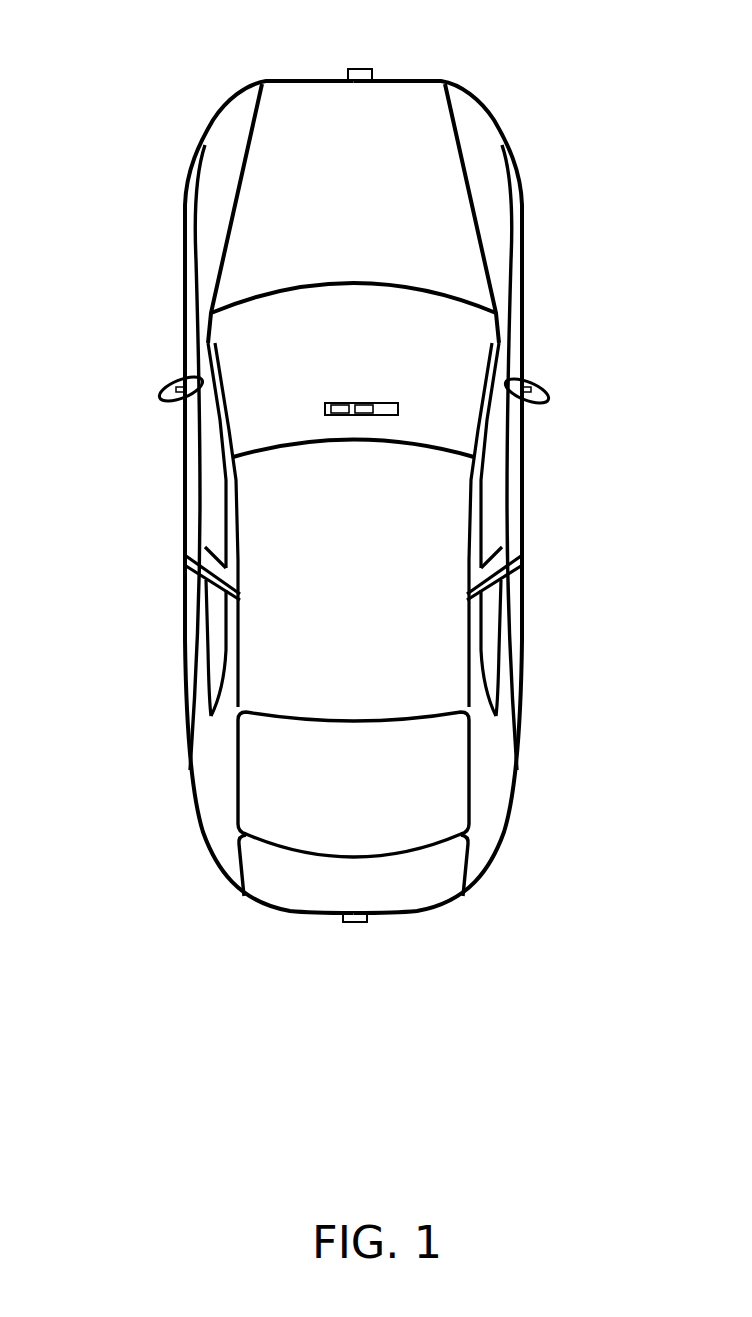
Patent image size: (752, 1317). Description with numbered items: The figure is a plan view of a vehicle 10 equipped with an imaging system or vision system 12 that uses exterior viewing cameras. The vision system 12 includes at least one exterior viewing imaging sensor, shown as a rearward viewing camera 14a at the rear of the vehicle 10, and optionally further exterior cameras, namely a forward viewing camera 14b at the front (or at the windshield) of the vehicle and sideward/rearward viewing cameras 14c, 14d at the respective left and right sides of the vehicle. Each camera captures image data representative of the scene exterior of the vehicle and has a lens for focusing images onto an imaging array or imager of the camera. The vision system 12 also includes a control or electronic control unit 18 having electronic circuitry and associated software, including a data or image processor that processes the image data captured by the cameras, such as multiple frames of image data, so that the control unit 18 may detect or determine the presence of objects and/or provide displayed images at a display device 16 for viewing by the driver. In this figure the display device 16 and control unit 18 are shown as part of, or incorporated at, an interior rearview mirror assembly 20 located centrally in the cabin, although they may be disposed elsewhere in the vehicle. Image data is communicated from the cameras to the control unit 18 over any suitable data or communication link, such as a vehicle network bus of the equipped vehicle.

The vehicle 10 is at (118, 91).
The vision system 12 is at (312, 934).
The rearward viewing camera 14a is at (362, 921).
The forward viewing camera 14b is at (366, 69).
The sideward/rearward viewing camera 14c is at (170, 386).
The sideward/rearward viewing camera 14d is at (536, 386).
The display device 16 is at (340, 404).
The electronic control unit 18 is at (362, 404).
The interior rearview mirror assembly 20 is at (395, 404).